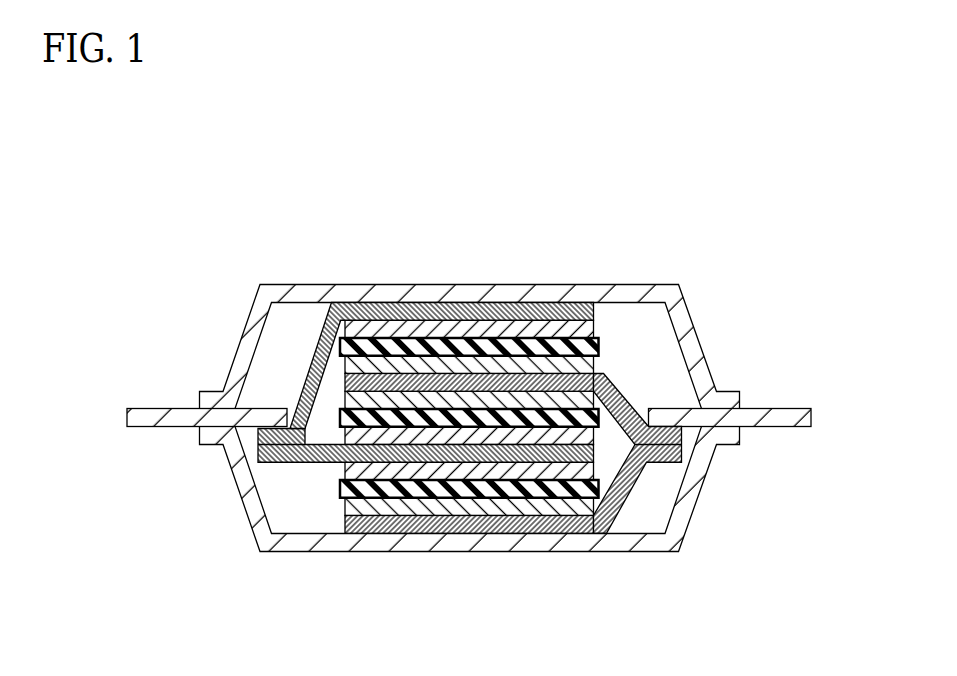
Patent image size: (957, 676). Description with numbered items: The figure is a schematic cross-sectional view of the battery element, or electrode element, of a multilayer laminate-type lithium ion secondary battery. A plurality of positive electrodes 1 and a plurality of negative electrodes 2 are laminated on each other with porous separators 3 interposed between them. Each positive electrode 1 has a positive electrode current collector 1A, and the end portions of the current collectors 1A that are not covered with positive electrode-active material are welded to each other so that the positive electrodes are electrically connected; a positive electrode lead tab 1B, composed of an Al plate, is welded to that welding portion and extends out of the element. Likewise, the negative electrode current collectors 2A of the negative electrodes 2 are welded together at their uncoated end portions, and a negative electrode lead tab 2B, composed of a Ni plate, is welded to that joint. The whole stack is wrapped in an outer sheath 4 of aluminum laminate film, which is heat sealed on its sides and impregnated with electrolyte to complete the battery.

The positive electrode 1 is at (495, 363).
The negative electrode 2 is at (427, 465).
The porous separator 3 is at (341, 487).
The outer sheath 4 is at (613, 293).
The positive electrode current collector 1A is at (682, 433).
The positive electrode lead tab 1B is at (723, 417).
The negative electrode current collector 2A is at (258, 433).
The negative electrode lead tab 2B is at (215, 417).